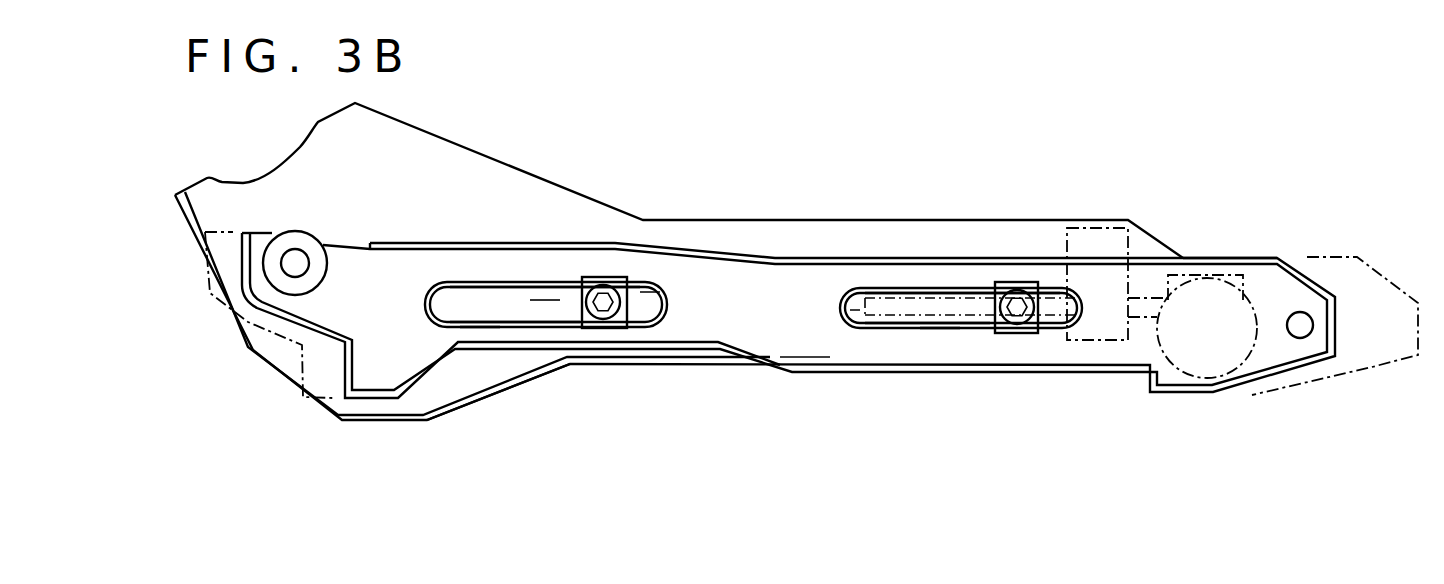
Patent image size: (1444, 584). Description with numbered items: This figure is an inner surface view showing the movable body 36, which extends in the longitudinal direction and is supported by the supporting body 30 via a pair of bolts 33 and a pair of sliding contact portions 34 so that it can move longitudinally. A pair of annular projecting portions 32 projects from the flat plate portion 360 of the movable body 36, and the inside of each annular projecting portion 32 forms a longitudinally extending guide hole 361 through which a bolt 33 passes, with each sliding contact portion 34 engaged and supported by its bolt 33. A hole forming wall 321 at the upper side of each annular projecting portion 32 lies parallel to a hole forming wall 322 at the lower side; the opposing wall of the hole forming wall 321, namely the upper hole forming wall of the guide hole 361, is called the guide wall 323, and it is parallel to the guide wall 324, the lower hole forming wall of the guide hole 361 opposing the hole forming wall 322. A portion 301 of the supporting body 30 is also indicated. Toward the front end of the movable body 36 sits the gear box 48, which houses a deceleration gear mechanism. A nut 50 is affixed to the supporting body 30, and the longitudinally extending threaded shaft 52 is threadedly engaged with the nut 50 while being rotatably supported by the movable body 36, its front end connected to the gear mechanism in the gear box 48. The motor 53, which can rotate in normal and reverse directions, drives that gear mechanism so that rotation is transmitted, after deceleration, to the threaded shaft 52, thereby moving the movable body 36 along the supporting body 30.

The supporting body 30 is at (785, 218).
The lower wall of mounting plate 301 is at (503, 370).
The annular projecting portion 32 is at (427, 307).
The hole forming wall 321 is at (493, 282).
The guide wall 323 is at (548, 300).
The guide wall 324 is at (538, 312).
The hole forming wall 322 is at (476, 330).
The bolt 33 is at (605, 317).
The sliding contact portion 34 is at (613, 277).
The movable body 36 is at (208, 296).
The flat plate portion 360 is at (800, 353).
The guide hole 361 is at (645, 298).
The gear box 48 is at (1233, 273).
The nut 50 is at (1097, 340).
The threaded shaft 52 is at (973, 330).
The motor 53 is at (1243, 360).